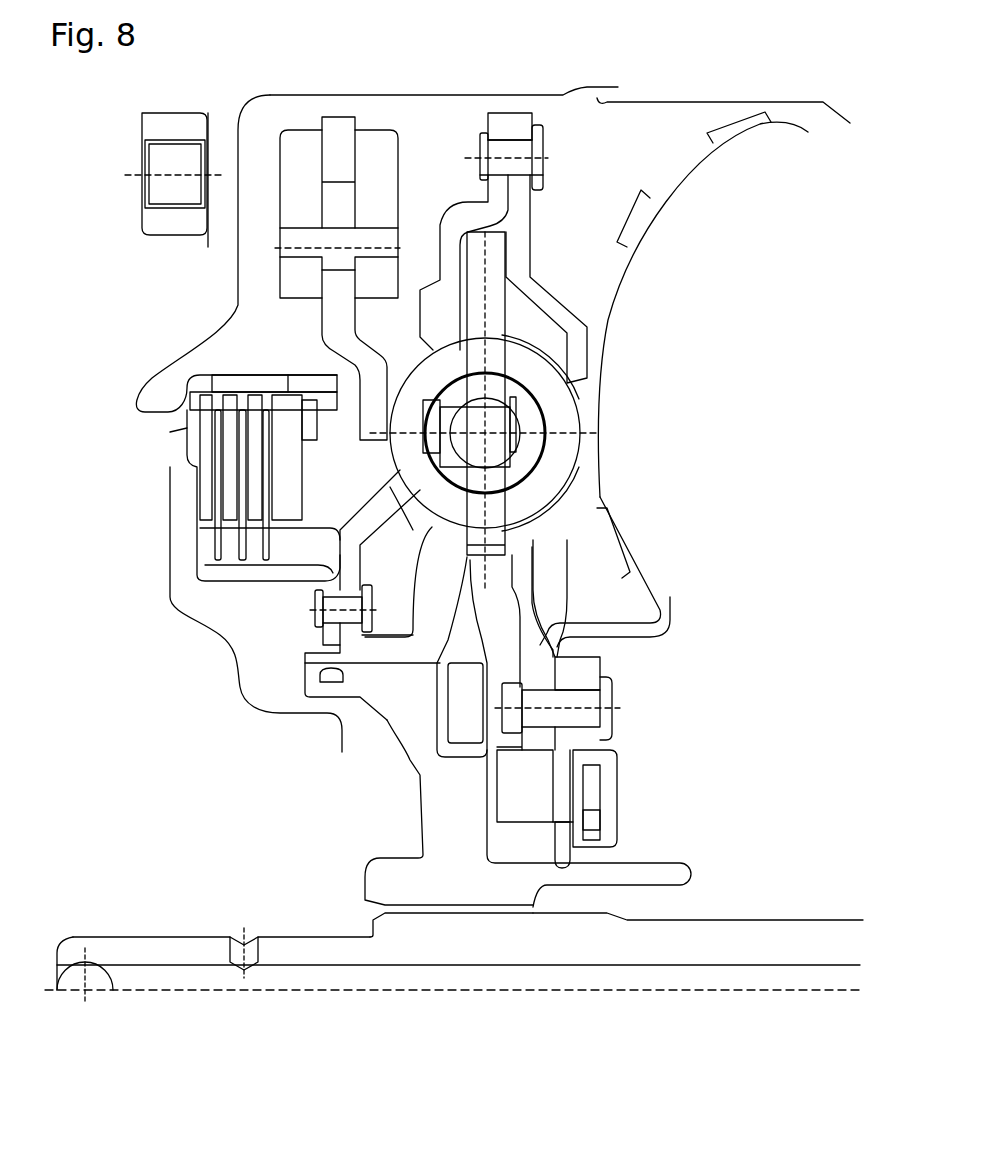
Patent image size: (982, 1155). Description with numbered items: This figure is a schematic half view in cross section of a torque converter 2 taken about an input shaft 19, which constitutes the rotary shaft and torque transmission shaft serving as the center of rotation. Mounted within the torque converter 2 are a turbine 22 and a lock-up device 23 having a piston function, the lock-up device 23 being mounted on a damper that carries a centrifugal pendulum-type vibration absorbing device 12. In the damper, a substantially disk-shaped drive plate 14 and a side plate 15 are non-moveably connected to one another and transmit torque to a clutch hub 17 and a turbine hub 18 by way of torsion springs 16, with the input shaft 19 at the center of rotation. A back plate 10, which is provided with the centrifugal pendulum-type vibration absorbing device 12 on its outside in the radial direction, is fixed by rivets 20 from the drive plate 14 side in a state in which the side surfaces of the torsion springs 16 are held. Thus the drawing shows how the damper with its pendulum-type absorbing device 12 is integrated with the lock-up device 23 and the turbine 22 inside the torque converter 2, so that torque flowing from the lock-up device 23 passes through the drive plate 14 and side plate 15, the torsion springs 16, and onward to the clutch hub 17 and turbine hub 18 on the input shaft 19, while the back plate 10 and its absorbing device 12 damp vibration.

The torque converter 2 is at (540, 85).
The back plate 10 is at (350, 350).
The centrifugal pendulum-type vibration absorbing device 12 is at (298, 135).
The drive plate 14 is at (470, 217).
The side plate 15 is at (520, 235).
The torsion spring 16 is at (565, 415).
The clutch hub 17 is at (480, 617).
The turbine hub 18 is at (540, 783).
The input shaft 19 is at (700, 933).
The rivet 20 is at (315, 623).
The turbine 22 is at (640, 227).
The lock-up device 23 is at (180, 490).